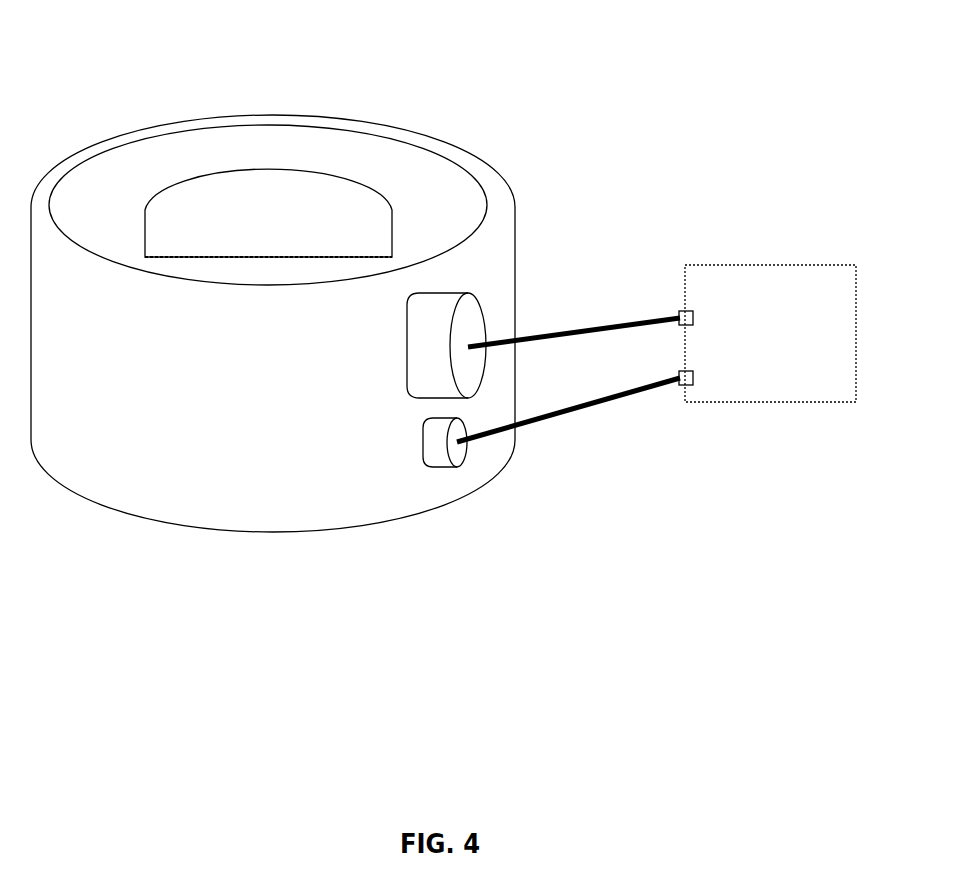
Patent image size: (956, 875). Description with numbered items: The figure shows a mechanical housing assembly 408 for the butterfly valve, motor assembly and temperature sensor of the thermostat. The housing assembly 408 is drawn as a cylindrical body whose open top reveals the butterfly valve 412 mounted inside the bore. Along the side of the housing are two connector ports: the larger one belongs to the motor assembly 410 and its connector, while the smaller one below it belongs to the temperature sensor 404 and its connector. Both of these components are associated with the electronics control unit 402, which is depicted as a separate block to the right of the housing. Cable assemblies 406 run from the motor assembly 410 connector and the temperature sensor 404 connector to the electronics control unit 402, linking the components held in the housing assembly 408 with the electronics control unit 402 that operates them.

The electronics control unit 402 is at (767, 333).
The temperature sensor 404 is at (472, 473).
The cable assemblies 406 is at (618, 341).
The mechanical housing assembly 408 is at (300, 457).
The motor assembly 410 is at (490, 290).
The butterfly valve 412 is at (335, 180).